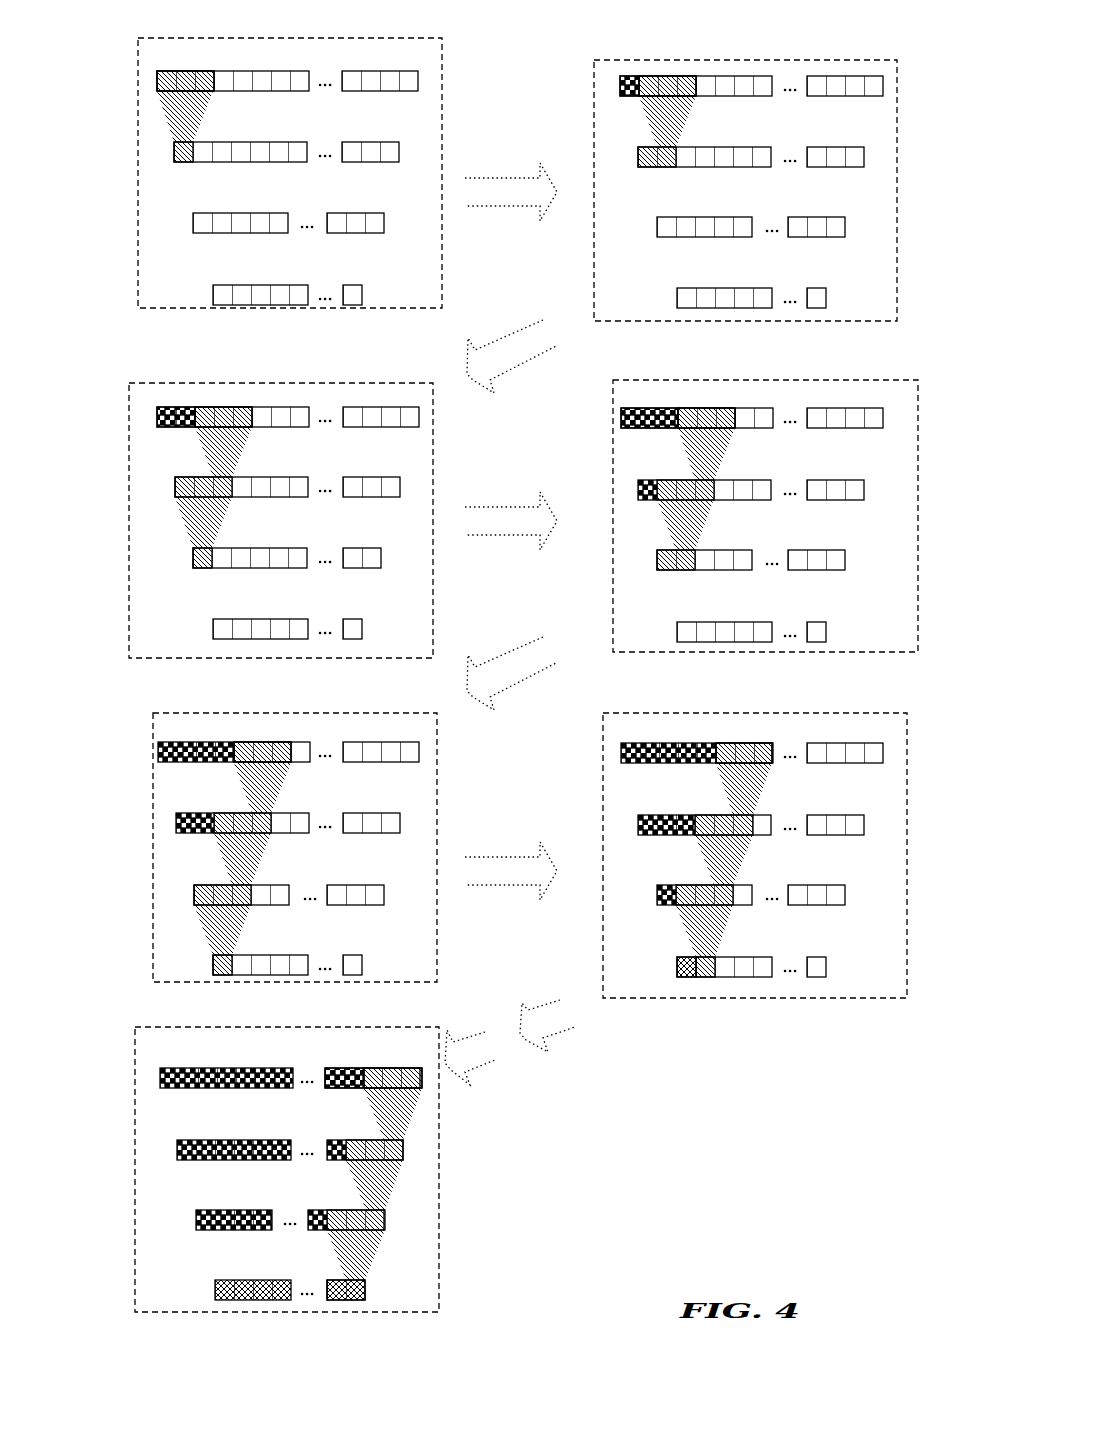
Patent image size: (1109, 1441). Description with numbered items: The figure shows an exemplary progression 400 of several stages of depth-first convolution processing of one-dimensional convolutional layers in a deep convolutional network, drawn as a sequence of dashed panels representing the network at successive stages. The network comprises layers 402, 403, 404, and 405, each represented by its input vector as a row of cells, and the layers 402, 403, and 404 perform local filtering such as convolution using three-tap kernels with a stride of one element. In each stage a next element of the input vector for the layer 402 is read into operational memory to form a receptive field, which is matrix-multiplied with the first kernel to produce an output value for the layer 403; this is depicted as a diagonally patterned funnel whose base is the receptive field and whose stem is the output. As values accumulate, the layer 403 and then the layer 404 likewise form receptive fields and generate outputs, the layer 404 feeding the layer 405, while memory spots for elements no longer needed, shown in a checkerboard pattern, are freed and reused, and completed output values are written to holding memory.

The progression 400 is at (476, 685).
The layer 402 is at (153, 80).
The layer 403 is at (170, 150).
The layer 404 is at (186, 220).
The layer 405 is at (205, 288).